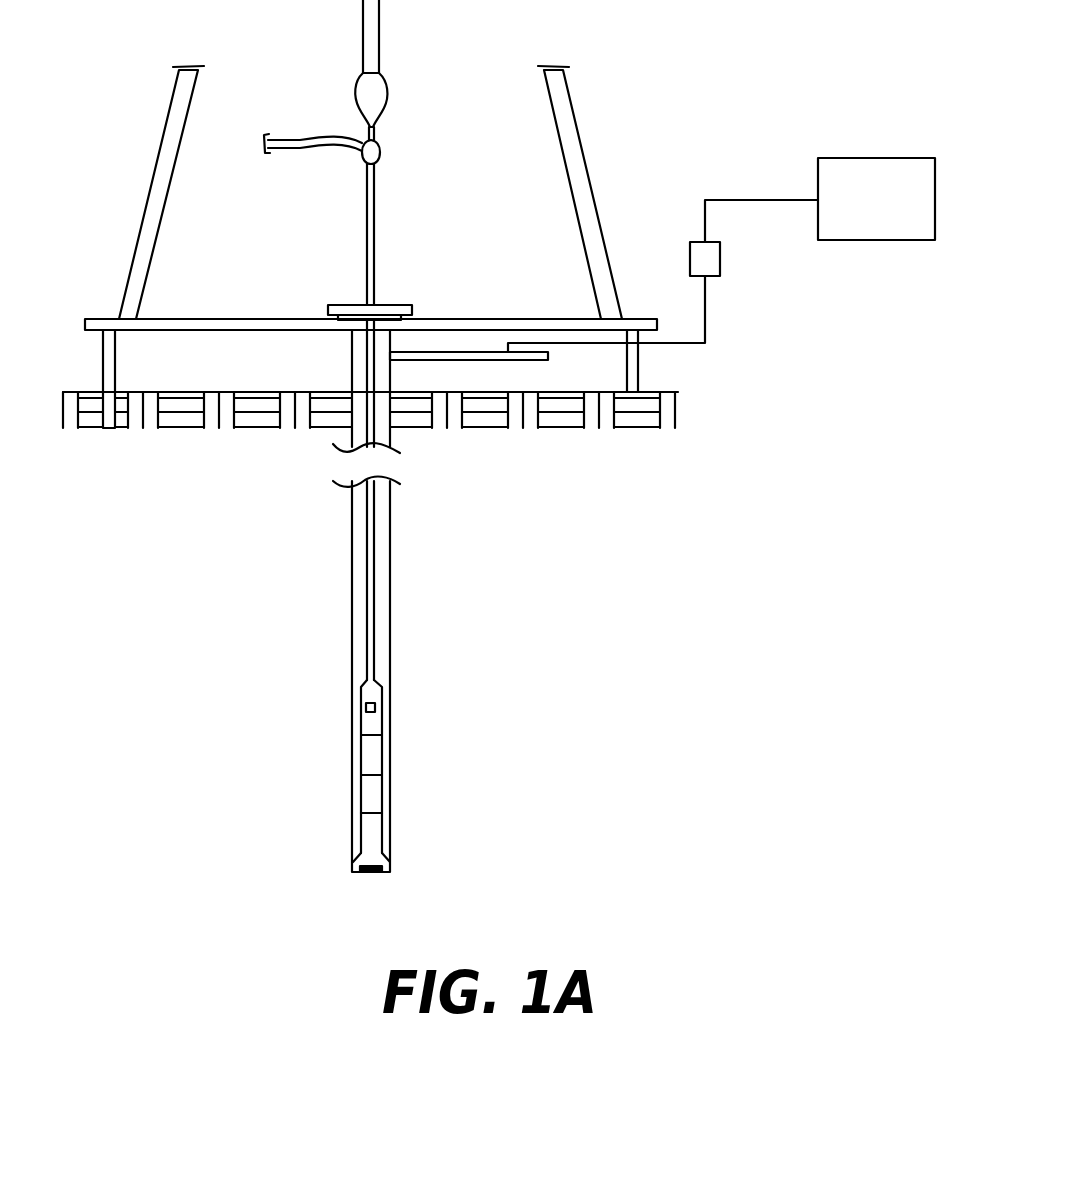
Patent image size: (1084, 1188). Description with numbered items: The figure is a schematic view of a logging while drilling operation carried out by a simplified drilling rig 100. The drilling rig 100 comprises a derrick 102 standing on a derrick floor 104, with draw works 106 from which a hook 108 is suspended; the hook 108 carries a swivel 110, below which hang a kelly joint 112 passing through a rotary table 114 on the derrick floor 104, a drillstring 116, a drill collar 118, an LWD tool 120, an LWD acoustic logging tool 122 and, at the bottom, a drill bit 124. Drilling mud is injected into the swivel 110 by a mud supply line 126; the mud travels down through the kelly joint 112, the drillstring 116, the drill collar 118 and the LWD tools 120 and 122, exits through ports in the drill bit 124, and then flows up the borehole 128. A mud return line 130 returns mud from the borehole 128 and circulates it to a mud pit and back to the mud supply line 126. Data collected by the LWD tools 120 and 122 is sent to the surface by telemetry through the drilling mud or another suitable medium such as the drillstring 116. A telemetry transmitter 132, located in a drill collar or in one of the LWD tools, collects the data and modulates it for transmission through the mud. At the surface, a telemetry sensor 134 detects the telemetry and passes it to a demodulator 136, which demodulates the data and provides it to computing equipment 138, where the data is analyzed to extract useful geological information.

The drilling rig 100 is at (746, 50).
The derrick 102 is at (565, 128).
The derrick floor 104 is at (565, 320).
The draw works 106 is at (380, 46).
The hook 108 is at (367, 128).
The swivel 110 is at (362, 157).
The kelly joint 112 is at (373, 230).
The rotary table 114 is at (348, 306).
The drillstring 116 is at (369, 567).
The drill collar 118 is at (362, 751).
The LWD tool 120 is at (370, 755).
The LWD acoustic logging tool 122 is at (370, 797).
The drill bit 124 is at (372, 862).
The mud supply line 126 is at (284, 152).
The borehole 128 is at (389, 572).
The mud return line 130 is at (435, 357).
The telemetry transmitter 132 is at (366, 706).
The telemetry sensor 134 is at (510, 345).
The demodulator 136 is at (698, 250).
The computing equipment 138 is at (869, 183).